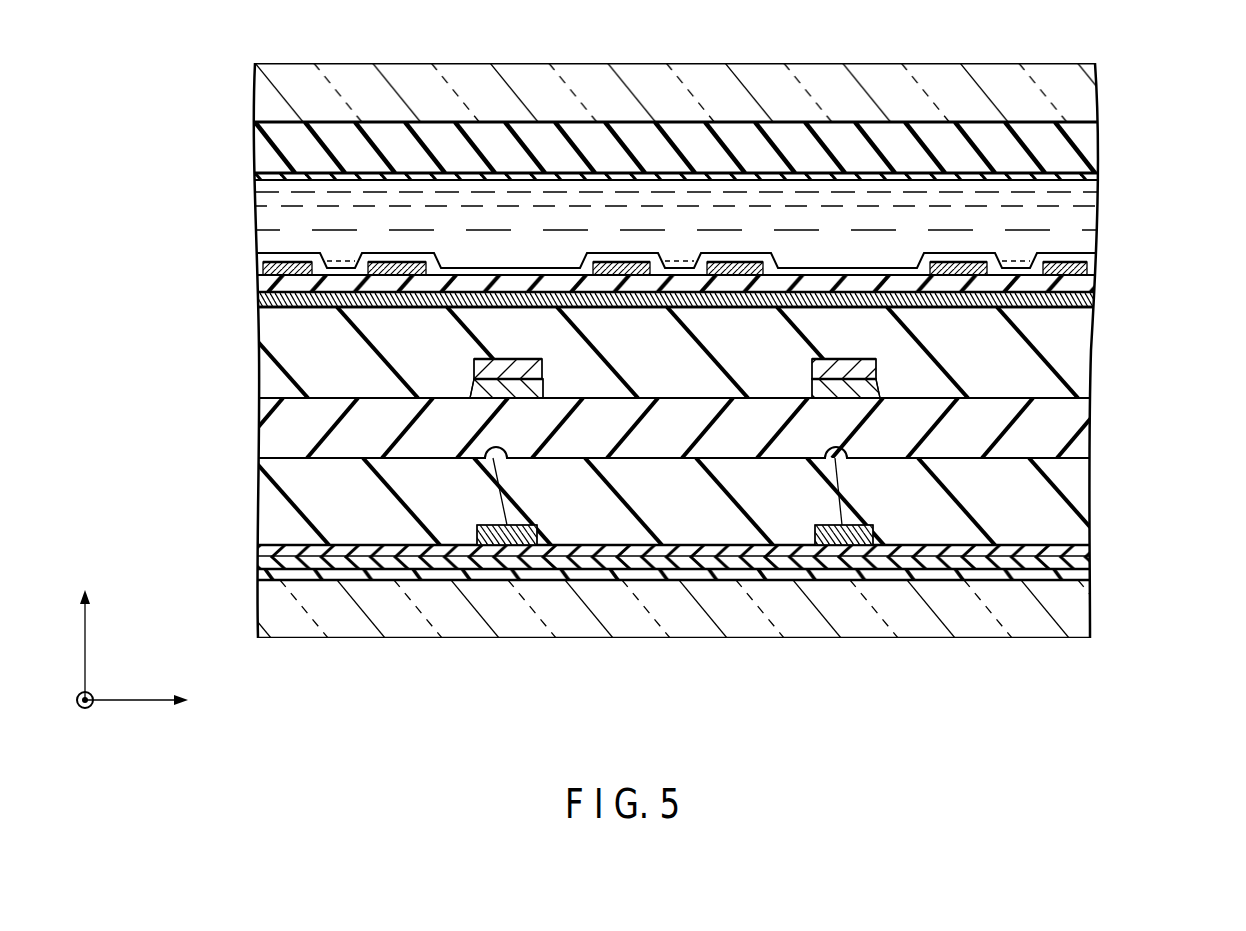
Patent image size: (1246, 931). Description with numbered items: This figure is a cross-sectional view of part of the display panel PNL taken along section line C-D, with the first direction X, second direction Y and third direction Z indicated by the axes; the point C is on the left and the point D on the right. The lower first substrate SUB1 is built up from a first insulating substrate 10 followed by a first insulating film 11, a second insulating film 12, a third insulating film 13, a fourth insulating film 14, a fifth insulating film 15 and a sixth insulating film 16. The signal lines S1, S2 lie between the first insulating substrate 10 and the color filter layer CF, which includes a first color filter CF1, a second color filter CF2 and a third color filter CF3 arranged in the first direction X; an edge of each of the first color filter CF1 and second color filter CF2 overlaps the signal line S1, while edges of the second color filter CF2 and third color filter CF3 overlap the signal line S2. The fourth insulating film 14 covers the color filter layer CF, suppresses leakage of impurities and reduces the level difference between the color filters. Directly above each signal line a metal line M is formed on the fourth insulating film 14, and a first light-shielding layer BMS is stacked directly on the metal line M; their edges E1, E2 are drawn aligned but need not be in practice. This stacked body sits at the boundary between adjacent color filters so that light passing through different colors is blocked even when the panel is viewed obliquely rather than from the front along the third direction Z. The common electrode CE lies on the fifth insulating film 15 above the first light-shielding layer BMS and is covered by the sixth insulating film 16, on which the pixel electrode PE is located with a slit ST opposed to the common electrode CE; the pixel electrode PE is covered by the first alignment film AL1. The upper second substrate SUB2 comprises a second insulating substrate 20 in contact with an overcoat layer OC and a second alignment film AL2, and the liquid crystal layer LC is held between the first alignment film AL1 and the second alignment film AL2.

The display panel PNL is at (1120, 66).
The first substrate SUB1 is at (1105, 460).
The second substrate SUB2 is at (1112, 122).
The first insulating substrate 10 is at (268, 623).
The first insulating film 11 is at (257, 573).
The second insulating film 12 is at (257, 562).
The third insulating film 13 is at (258, 548).
The fourth insulating film 14 is at (270, 428).
The fifth insulating film 15 is at (270, 343).
The sixth insulating film 16 is at (262, 280).
The second insulating substrate 20 is at (262, 86).
The overcoat layer OC is at (260, 142).
The first alignment film AL1 is at (262, 246).
The second alignment film AL2 is at (264, 179).
The liquid crystal layer LC is at (1082, 243).
The pixel electrode PE is at (721, 262).
The common electrode CE is at (262, 297).
The slit ST is at (676, 262).
The color filter layer CF is at (254, 488).
The first color filter CF1 is at (358, 522).
The second color filter CF2 is at (664, 522).
The third color filter CF3 is at (993, 522).
The edge of the metal line E1 is at (462, 388).
The edge of the first light-shielding layer E2 is at (462, 366).
The metal line M is at (535, 392).
The first light-shielding layer BMS is at (543, 368).
The signal line S1 is at (498, 548).
The signal line S2 is at (847, 548).
The line C-D end point C is at (257, 662).
The line C-D end point D is at (1092, 664).
The first direction X is at (147, 704).
The second direction Y is at (75, 715).
The third direction Z is at (85, 628).